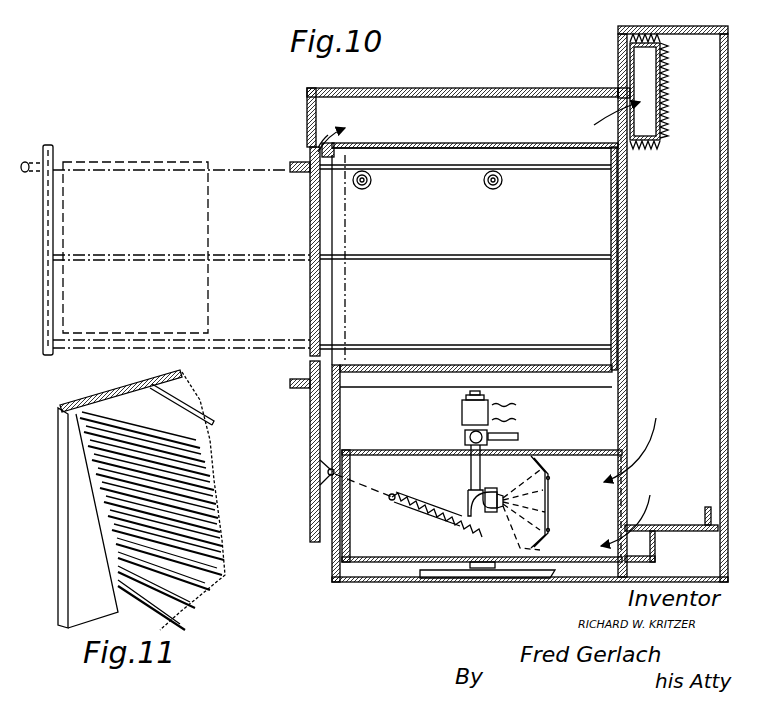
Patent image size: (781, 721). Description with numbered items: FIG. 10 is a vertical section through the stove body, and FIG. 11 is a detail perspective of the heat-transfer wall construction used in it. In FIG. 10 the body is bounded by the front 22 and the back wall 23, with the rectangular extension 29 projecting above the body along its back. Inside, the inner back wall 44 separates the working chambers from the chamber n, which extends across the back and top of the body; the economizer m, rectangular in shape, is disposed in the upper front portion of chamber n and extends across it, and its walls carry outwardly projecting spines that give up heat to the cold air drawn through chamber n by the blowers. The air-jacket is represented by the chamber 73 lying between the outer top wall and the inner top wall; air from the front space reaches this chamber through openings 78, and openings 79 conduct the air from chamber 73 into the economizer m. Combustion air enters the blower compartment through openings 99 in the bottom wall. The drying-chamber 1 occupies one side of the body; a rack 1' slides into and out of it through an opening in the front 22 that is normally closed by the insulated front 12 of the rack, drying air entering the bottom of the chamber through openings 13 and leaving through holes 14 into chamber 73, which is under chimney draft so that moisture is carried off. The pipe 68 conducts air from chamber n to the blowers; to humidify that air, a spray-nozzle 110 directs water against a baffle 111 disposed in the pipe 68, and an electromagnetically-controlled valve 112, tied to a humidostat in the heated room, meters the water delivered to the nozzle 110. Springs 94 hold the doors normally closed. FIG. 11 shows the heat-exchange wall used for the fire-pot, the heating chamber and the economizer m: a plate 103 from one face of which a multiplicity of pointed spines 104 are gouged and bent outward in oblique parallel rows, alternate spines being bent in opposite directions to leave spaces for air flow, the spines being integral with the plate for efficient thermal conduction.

In FIG. 10, the air-jacket chamber 73 is at (412, 110).
In FIG. 10, the holes 14 is at (576, 149).
In FIG. 10, the openings 78 is at (308, 128).
In FIG. 10, the back wall 23 is at (728, 327).
In FIG. 10, the chamber n is at (642, 305).
In FIG. 10, the economizer m is at (650, 83).
In FIG. 10, the openings 79 is at (627, 110).
In FIG. 10, the openings 99 is at (340, 413).
In FIG. 10, the drying-chamber 1 is at (465, 198).
In FIG. 10, the rack 1' is at (465, 290).
In FIG. 10, the insulated front 12 is at (45, 219).
In FIG. 10, the openings 13 is at (578, 373).
In FIG. 10, the inner back wall 44 is at (627, 395).
In FIG. 10, the air pipe 68 is at (592, 459).
In FIG. 10, the rectangular extension 29 is at (690, 519).
In FIG. 10, the electromagnetically-controlled valve 112 is at (465, 413).
In FIG. 10, the spray-nozzle 110 is at (504, 490).
In FIG. 10, the baffle 111 is at (546, 495).
In FIG. 10, the springs 94 is at (409, 495).
In FIG. 10, the front 22 is at (320, 474).
In FIG. 11, the plate 103 is at (70, 484).
In FIG. 11, the spines 104 is at (98, 527).